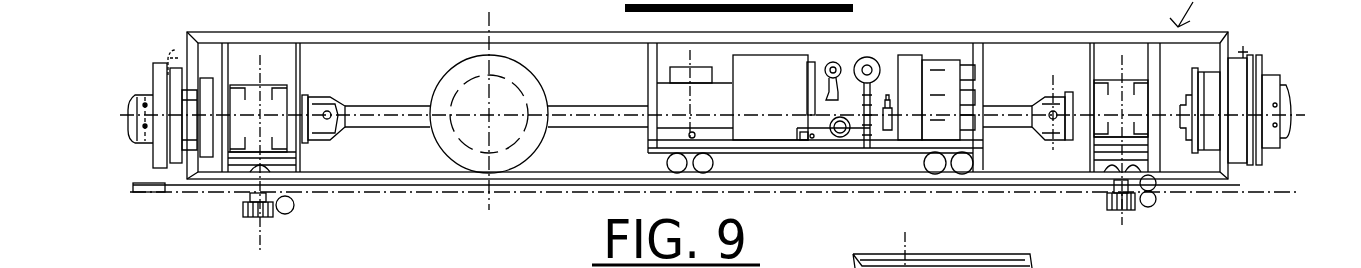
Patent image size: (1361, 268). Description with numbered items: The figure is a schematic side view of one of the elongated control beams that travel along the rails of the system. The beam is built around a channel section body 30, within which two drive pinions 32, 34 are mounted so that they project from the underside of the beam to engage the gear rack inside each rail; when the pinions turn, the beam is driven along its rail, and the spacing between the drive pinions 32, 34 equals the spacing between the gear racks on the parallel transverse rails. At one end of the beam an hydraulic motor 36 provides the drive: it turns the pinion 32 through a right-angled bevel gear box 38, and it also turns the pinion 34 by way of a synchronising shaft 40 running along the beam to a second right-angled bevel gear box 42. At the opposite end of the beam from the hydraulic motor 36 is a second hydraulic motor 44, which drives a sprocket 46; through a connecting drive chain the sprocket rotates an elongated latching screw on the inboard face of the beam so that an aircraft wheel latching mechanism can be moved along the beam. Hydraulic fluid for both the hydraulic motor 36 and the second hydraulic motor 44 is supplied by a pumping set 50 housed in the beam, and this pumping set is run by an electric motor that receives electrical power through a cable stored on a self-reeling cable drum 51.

The channel section body 30 is at (403, 40).
The drive pinion 32 is at (294, 210).
The drive pinion 34 is at (1105, 200).
The hydraulic motor 36 is at (146, 95).
The right-angled bevel gear box 38 is at (268, 108).
The synchronising shaft 40 is at (594, 115).
The right-angled bevel gear box 42 is at (1122, 105).
The second hydraulic motor 44 is at (1275, 130).
The sprocket 46 is at (1195, 153).
The pumping set 50 is at (762, 122).
The self-reeling cable drum 51 is at (468, 165).